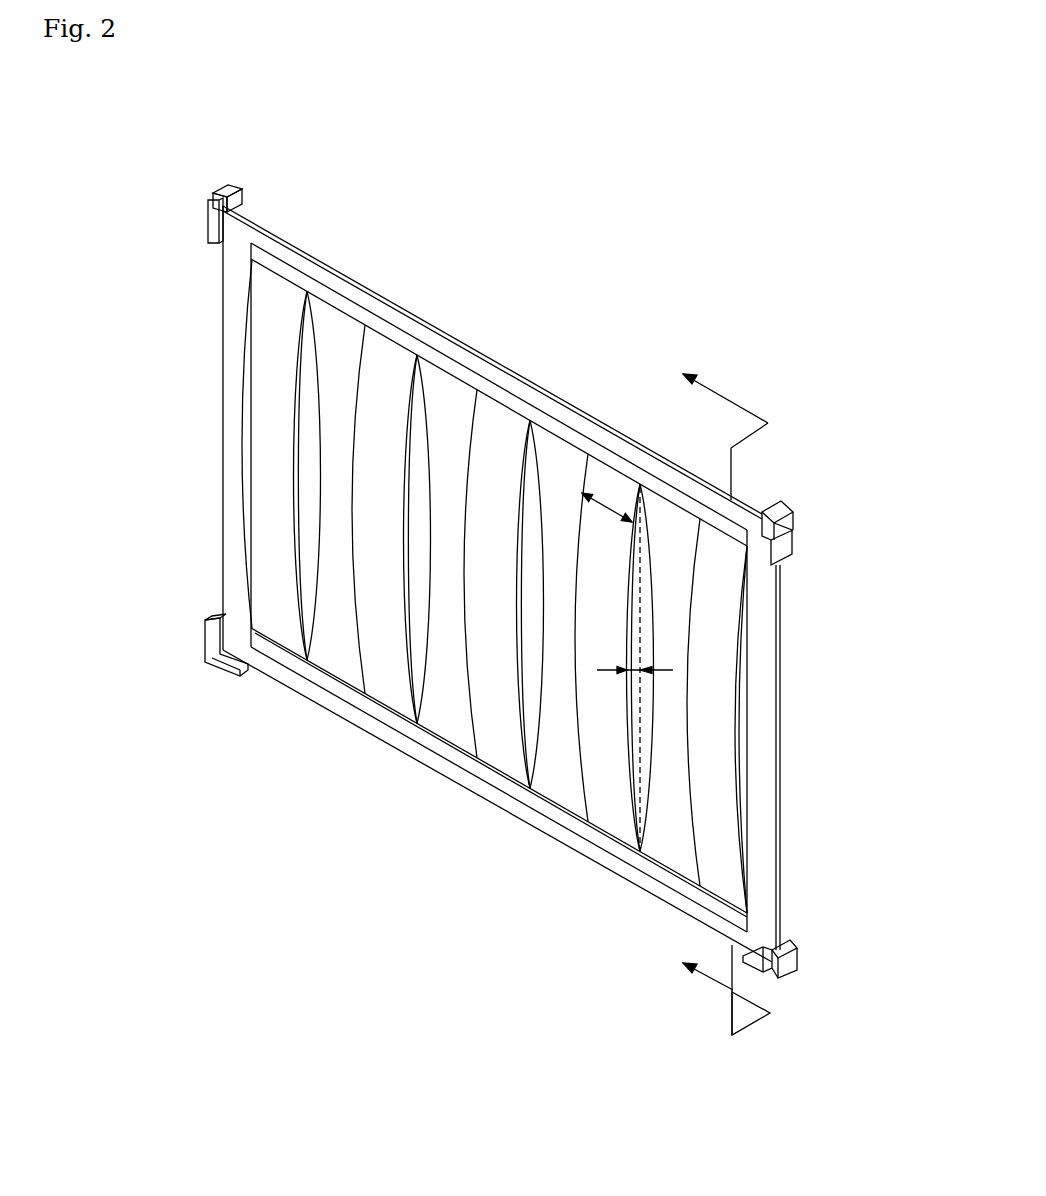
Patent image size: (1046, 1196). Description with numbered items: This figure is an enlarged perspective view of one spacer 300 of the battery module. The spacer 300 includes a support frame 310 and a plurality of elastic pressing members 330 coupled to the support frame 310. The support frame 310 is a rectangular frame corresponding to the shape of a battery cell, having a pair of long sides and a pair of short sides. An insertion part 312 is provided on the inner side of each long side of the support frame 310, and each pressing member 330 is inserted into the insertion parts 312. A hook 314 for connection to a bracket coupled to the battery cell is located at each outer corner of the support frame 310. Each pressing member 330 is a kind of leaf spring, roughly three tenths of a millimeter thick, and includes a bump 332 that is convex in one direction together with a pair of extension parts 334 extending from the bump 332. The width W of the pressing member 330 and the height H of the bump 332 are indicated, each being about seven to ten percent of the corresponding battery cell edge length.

The spacer 300 is at (123, 137).
The support frame 310 is at (227, 392).
The insertion part 312 is at (339, 303).
The hook 314 is at (216, 190).
The pressing member 330 is at (272, 553).
The bump 332 is at (718, 810).
The extension part 334 is at (725, 895).